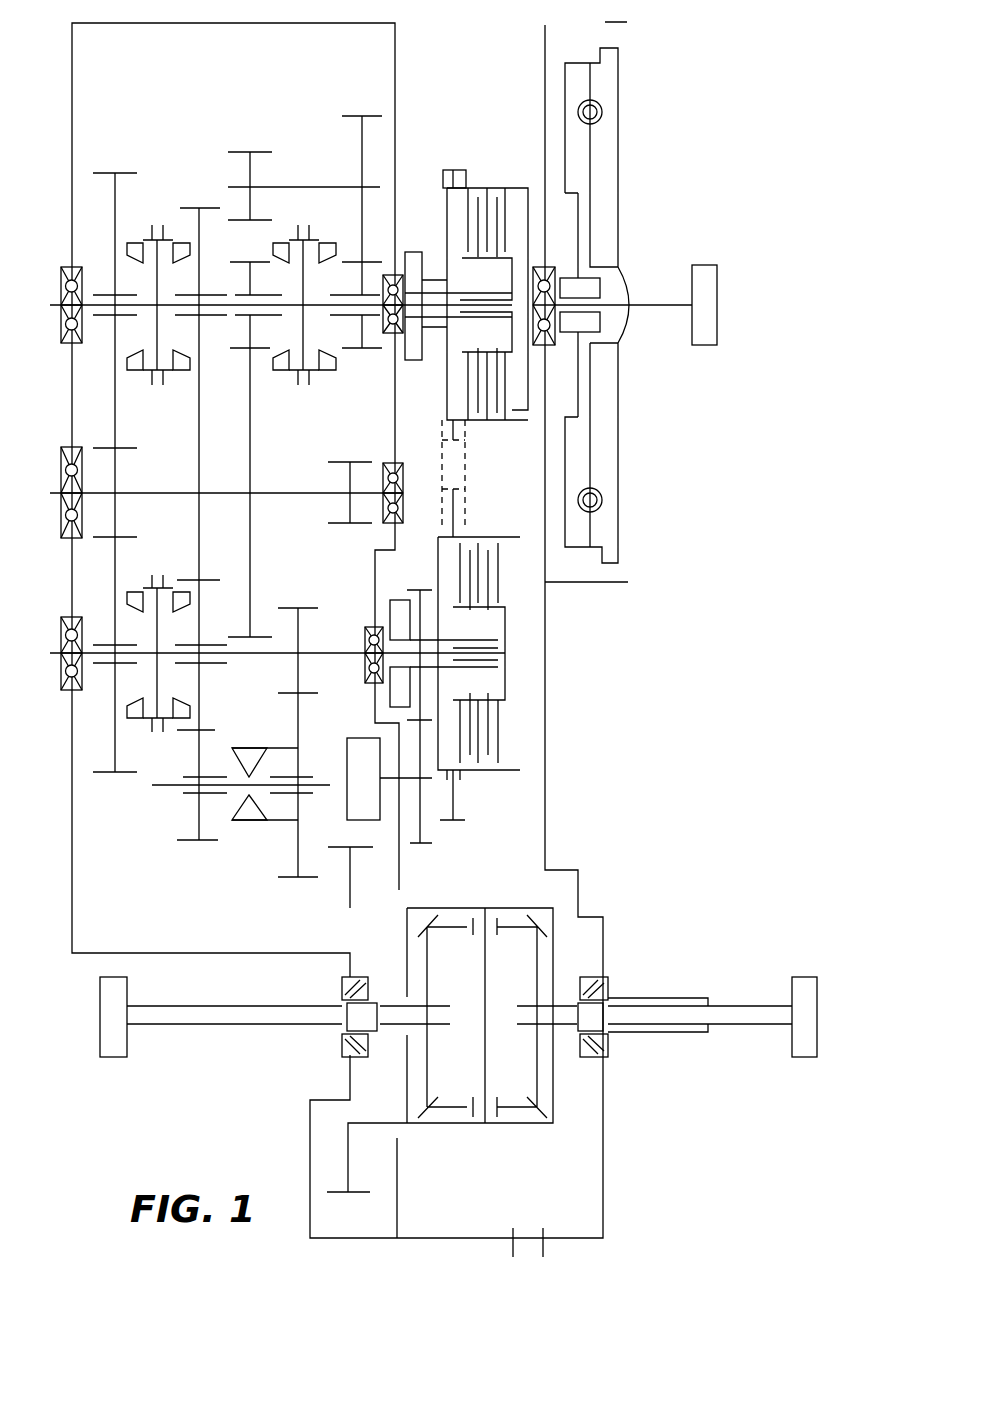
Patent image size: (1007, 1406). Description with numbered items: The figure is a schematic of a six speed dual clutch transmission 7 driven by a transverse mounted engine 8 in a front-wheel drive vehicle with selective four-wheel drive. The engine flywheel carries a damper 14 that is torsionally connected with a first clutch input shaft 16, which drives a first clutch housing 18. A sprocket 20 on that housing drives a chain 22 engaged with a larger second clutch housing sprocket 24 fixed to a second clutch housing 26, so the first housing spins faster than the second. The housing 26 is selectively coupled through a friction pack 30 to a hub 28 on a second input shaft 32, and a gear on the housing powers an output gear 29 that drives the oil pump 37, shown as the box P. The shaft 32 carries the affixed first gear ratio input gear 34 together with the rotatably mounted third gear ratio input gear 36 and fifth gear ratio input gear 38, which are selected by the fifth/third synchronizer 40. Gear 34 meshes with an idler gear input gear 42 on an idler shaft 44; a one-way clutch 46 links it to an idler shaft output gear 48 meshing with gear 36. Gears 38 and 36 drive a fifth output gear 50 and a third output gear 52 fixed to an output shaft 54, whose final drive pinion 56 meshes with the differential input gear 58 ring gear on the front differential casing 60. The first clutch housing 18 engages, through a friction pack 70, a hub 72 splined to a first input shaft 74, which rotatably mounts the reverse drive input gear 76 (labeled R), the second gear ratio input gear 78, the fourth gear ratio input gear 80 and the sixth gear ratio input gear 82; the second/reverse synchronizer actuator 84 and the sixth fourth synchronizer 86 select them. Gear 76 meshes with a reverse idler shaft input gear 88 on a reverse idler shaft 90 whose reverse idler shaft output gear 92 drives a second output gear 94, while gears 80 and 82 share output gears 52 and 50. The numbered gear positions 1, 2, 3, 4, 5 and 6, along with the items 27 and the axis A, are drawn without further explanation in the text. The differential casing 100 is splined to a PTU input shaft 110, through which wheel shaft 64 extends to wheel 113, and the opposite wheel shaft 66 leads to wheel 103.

The first gear 1 is at (298, 726).
The second gear 2 is at (256, 436).
The third gear 3 is at (204, 728).
The fourth gear 4 is at (201, 511).
The fifth gear 5 is at (115, 788).
The sixth gear 6 is at (115, 460).
The six speed dual clutch transmission 7 is at (652, 48).
The engine 8 is at (708, 265).
The damper 14 is at (619, 207).
The first clutch input shaft 16 is at (610, 305).
The first clutch housing 18 is at (480, 186).
The sprocket 20 is at (446, 182).
The chain 22 is at (465, 450).
The second clutch housing sprocket 24 is at (455, 792).
The second clutch housing 26 is at (470, 537).
The hollow shaft 27 is at (425, 590).
The hub 28 is at (503, 627).
The output gear 29 is at (428, 835).
The friction pack 30 is at (498, 582).
The second input shaft 32 is at (505, 648).
The first gear ratio input gear 34 is at (299, 628).
The third gear ratio input gear 36 is at (198, 612).
The oil pump 37 is at (347, 744).
The fifth gear ratio input gear 38 is at (114, 762).
The fifth/third synchronizer 40 is at (157, 590).
The idler gear input gear 42 is at (299, 715).
The idler shaft 44 is at (322, 786).
The one-way clutch 46 is at (243, 822).
The idler shaft output gear 48 is at (198, 810).
The fifth output gear 50 is at (115, 478).
The third output gear 52 is at (199, 467).
The output shaft 54 is at (260, 493).
The final drive pinion 56 is at (368, 462).
The differential input gear 58 is at (362, 850).
The front differential casing 60 is at (553, 910).
The wheel shaft 64 is at (565, 997).
The wheel shaft 66 is at (396, 997).
The friction pack 70 is at (505, 218).
The hub 72 is at (513, 272).
The first input shaft 74 is at (385, 272).
The reverse drive input gear 76 is at (360, 322).
The second gear ratio input gear 78 is at (250, 285).
The fourth gear ratio input gear 80 is at (200, 288).
The sixth gear ratio input gear 82 is at (114, 288).
The second/reverse synchronizer actuator 84 is at (304, 240).
The sixth fourth synchronizer 86 is at (157, 240).
The reverse idler shaft input gear 88 is at (360, 158).
The reverse idler shaft 90 is at (283, 186).
The reverse idler shaft output gear 92 is at (238, 150).
The second output gear 94 is at (256, 449).
The casing 100 is at (553, 940).
The wheel 103 is at (100, 1037).
The PTU input shaft 110 is at (722, 1002).
The wheel 113 is at (806, 1058).
The axis A is at (603, 1050).
The pump P is at (363, 779).
The reverse gear R is at (359, 360).